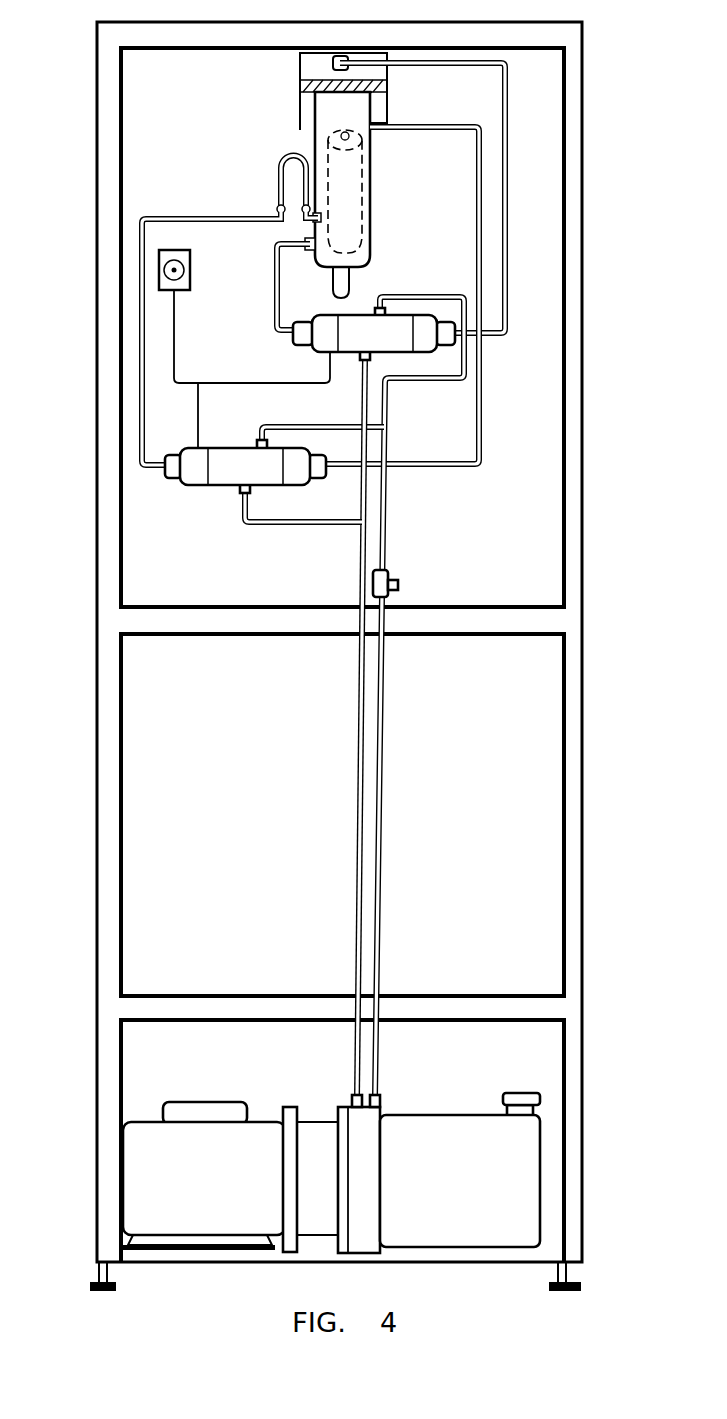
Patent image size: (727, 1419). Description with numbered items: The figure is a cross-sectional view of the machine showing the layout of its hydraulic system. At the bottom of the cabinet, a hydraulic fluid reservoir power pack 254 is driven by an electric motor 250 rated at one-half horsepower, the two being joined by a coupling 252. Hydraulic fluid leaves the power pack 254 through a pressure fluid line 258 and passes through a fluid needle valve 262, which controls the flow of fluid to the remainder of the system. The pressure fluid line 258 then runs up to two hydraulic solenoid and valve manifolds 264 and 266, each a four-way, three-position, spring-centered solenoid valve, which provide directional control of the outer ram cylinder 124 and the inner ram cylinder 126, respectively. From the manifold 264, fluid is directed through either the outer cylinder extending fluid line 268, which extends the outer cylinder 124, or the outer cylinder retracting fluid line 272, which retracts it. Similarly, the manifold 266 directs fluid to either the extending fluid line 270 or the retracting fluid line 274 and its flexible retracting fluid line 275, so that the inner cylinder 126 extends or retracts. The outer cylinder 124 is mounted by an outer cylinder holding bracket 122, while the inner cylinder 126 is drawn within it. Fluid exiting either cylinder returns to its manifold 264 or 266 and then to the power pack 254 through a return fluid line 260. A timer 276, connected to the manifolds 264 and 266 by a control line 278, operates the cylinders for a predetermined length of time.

The outer cylinder holding bracket 122 is at (302, 102).
The outer ram cylinder 124 is at (348, 110).
The inner ram cylinder 126 is at (370, 200).
The electric motor 250 is at (185, 1208).
The coupling 252 is at (315, 1210).
The hydraulic fluid reservoir power pack 254 is at (440, 1210).
The pressure fluid line 258 is at (340, 425).
The return fluid line 260 is at (361, 375).
The fluid needle valve 262 is at (399, 585).
The hydraulic solenoid and valve manifold 264 is at (352, 340).
The hydraulic solenoid and valve manifold 266 is at (260, 472).
The outer cylinder extending fluid line 268 is at (506, 232).
The extending fluid line 270 is at (481, 190).
The outer cylinder retracting fluid line 272 is at (277, 287).
The retracting fluid line 274 is at (213, 217).
The flexible retracting fluid line 275 is at (290, 152).
The timer 276 is at (183, 251).
The control line 278 is at (176, 328).